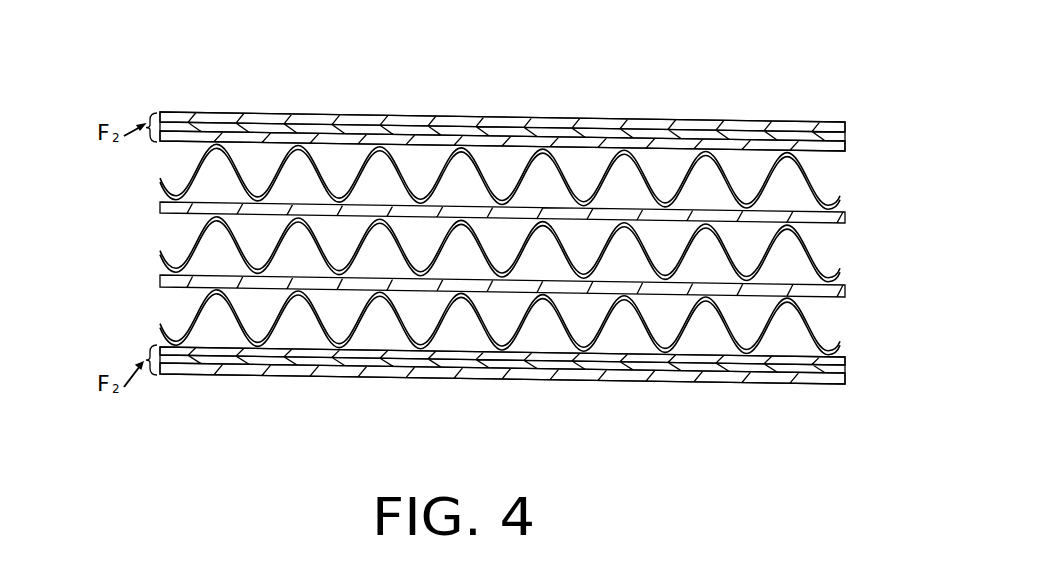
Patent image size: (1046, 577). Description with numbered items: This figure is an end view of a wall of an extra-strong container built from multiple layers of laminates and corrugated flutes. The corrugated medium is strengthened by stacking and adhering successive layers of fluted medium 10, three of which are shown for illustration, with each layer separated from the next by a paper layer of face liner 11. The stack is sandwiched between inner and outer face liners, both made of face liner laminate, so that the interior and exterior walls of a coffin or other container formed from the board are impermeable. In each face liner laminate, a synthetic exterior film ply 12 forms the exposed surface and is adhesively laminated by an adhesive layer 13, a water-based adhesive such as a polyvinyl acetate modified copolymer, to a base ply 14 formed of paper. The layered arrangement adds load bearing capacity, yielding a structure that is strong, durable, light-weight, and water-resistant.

The fluted core 10 is at (192, 178).
The inner face liner 11 is at (842, 222).
The exterior film ply 12 is at (588, 126).
The adhesive layer 13 is at (848, 132).
The base ply 14 is at (848, 149).